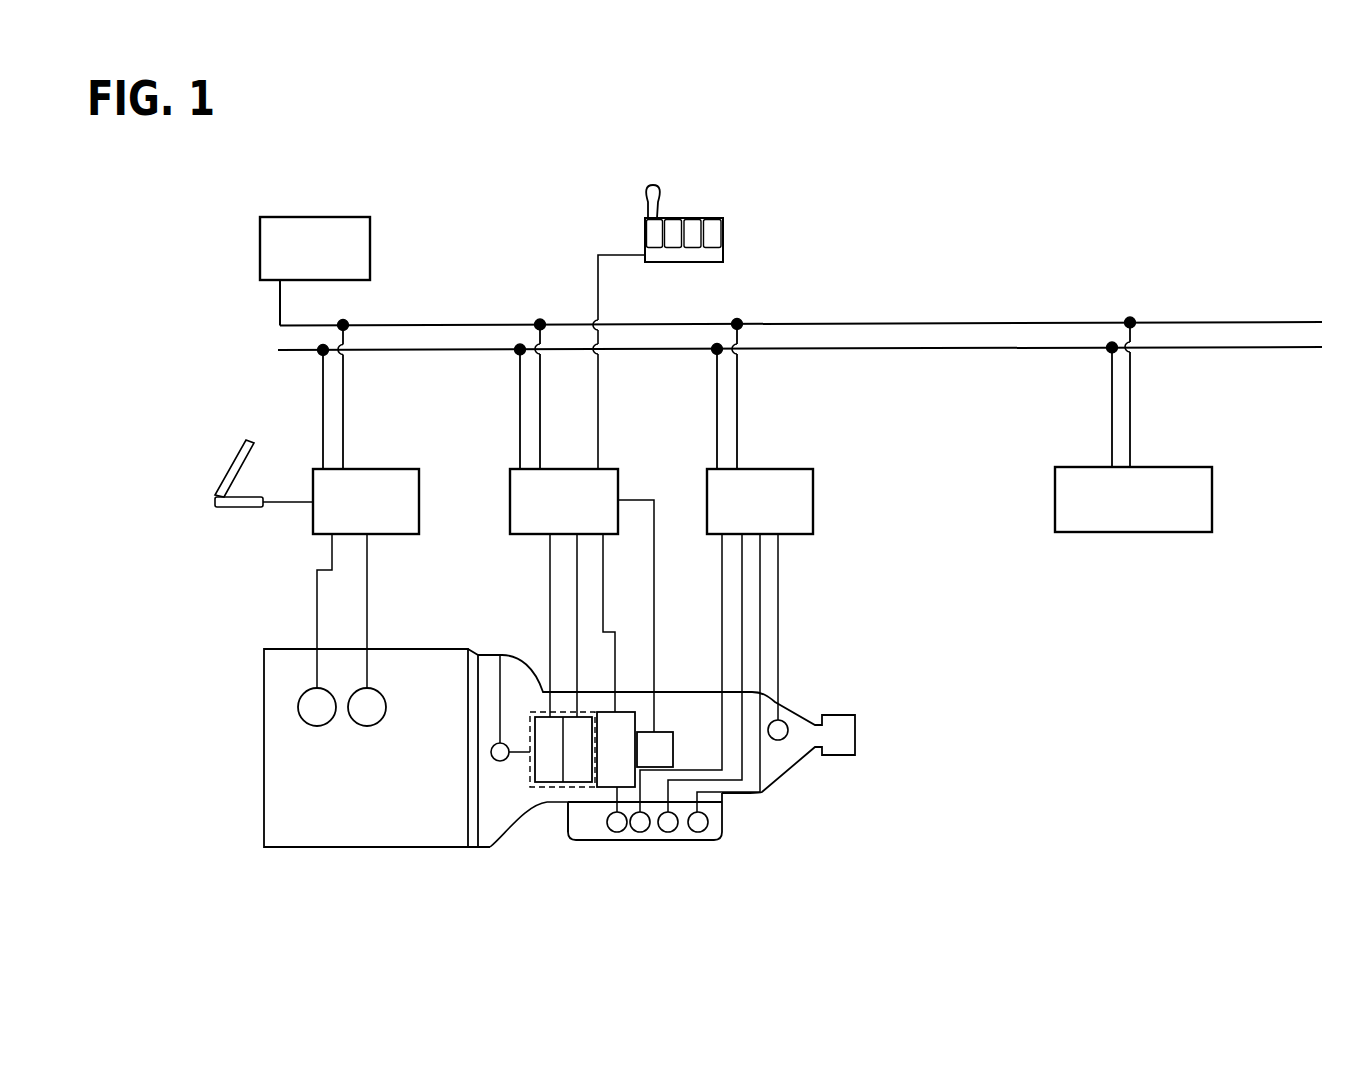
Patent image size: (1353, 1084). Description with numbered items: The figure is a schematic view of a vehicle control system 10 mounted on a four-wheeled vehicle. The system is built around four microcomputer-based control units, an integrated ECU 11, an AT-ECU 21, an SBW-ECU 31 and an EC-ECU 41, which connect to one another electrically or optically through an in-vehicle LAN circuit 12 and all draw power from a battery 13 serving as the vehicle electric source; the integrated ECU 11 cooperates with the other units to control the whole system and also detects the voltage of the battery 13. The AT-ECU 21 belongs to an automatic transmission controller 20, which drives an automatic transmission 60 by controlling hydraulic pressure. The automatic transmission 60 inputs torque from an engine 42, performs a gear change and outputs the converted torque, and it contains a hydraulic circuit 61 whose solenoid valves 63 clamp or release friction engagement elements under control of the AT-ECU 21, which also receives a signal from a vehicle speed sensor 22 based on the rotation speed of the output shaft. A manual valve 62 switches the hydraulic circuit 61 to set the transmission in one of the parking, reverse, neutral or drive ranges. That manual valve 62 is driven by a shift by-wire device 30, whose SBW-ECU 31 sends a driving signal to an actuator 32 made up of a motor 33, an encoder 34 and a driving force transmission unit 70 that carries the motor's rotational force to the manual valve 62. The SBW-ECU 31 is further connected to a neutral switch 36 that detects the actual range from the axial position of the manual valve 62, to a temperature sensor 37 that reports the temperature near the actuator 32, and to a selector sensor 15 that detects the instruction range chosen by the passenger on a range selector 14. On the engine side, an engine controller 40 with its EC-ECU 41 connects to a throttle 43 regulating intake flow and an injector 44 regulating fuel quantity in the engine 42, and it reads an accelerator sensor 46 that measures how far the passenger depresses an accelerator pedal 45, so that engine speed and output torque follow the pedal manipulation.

The vehicle control system 10 is at (1087, 309).
The integrated electronic control unit 11 is at (1172, 467).
The in-vehicle LAN circuit 12 is at (571, 349).
The battery 13 is at (370, 239).
The range selector 14 is at (645, 190).
The selector sensor 15 is at (698, 218).
The automatic transmission controller 20 is at (713, 464).
The AT-ECU 21 is at (783, 469).
The vehicle speed sensor 22 is at (778, 741).
The shift by-wire device 30 is at (507, 462).
The SBW-ECU 31 is at (548, 469).
The actuator 32 is at (530, 712).
The motor 33 is at (567, 803).
The encoder 34 is at (535, 791).
The neutral switch 36 is at (663, 732).
The temperature sensor 37 is at (495, 761).
The engine controller 40 is at (310, 462).
The EC-ECU 41 is at (382, 469).
The engine 42 is at (287, 648).
The throttle 43 is at (298, 707).
The injector 44 is at (363, 727).
The accelerator pedal 45 is at (245, 447).
The accelerator sensor 46 is at (232, 508).
The automatic transmission 60 is at (790, 709).
The hydraulic circuit 61 is at (577, 844).
The manual valve 62 is at (618, 833).
The solenoid valves 63 is at (668, 833).
The driving force transmission unit 70 is at (627, 712).